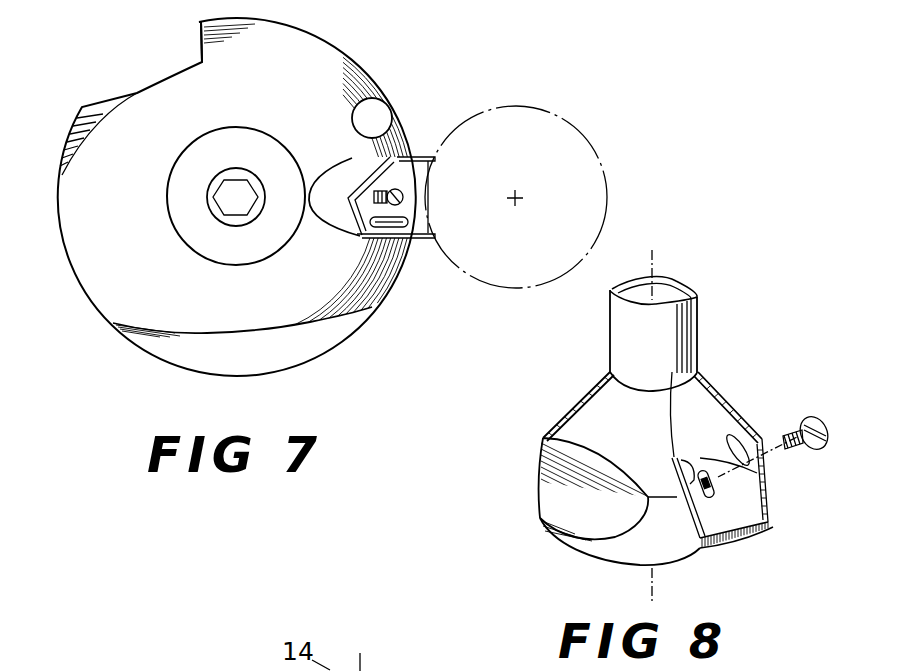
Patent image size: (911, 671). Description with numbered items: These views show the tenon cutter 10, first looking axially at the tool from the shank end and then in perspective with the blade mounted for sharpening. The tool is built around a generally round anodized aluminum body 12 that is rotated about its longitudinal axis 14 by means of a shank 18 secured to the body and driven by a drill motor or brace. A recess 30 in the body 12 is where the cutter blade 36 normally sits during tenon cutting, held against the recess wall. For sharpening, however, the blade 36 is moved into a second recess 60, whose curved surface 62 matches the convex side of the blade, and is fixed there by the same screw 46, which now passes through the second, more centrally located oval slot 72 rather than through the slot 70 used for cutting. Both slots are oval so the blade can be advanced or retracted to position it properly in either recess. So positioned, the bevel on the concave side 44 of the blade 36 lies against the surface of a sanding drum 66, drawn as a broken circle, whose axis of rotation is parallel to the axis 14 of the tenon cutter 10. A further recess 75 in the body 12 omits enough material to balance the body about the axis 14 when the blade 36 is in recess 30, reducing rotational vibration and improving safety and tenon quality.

In FIG. 7, the tenon cutter 10 is at (374, 96).
In FIG. 8, the tenon cutter 10 is at (688, 273).
In FIG. 7, the body 12 is at (107, 297).
In FIG. 8, the body 12 is at (573, 413).
In FIG. 8, the longitudinal axis 14 is at (652, 570).
In FIG. 7, the shank 18 is at (235, 183).
In FIG. 7, the recess 30 is at (185, 54).
In FIG. 7, the cutter blade 36 is at (434, 153).
In FIG. 8, the cutter blade 36 is at (766, 545).
In FIG. 7, the concave side 44 is at (418, 203).
In FIG. 7, the screw 46 is at (402, 193).
In FIG. 8, the screw 46 is at (812, 421).
In FIG. 7, the second recess 60 is at (328, 186).
In FIG. 8, the second recess 60 is at (690, 424).
In FIG. 7, the curved surface 62 is at (342, 183).
In FIG. 8, the curved surface 62 is at (703, 432).
In FIG. 7, the sanding drum 66 is at (543, 119).
In FIG. 7, the slot 70 is at (426, 240).
In FIG. 8, the slot 70 is at (677, 450).
In FIG. 7, the oval slot 72 is at (362, 222).
In FIG. 8, the oval slot 72 is at (724, 497).
In FIG. 7, the recess 75 is at (220, 347).
In FIG. 8, the recess 75 is at (565, 485).